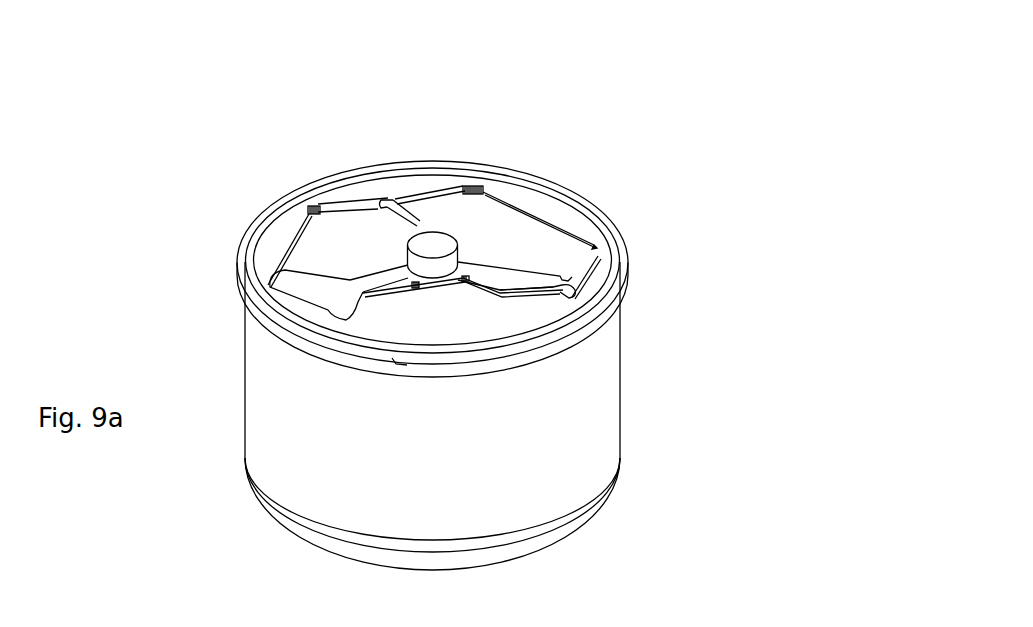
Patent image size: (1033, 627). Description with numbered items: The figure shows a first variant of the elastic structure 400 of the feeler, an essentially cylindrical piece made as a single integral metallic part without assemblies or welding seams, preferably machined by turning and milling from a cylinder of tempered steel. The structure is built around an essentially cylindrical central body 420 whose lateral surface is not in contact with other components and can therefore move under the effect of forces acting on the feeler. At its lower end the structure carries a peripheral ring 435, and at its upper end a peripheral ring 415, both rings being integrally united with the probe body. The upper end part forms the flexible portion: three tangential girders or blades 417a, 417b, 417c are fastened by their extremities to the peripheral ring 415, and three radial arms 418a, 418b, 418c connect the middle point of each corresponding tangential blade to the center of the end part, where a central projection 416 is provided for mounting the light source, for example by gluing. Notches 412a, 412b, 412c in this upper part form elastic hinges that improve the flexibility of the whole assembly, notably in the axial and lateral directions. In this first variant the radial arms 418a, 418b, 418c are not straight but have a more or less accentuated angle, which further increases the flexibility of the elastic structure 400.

The elastic structure 400 is at (234, 441).
The peripheral ring 415 is at (273, 208).
The central projection 416 is at (459, 258).
The cylindrical central body 420 is at (255, 398).
The peripheral ring 435 is at (557, 540).
The notch 412a is at (563, 292).
The notch 412b is at (403, 197).
The notch 412c is at (270, 292).
The tangential blade 417a is at (597, 252).
The tangential blade 417b is at (422, 187).
The tangential blade 417c is at (297, 307).
The radial arm 418a is at (493, 267).
The radial arm 418b is at (370, 207).
The radial arm 418c is at (348, 290).